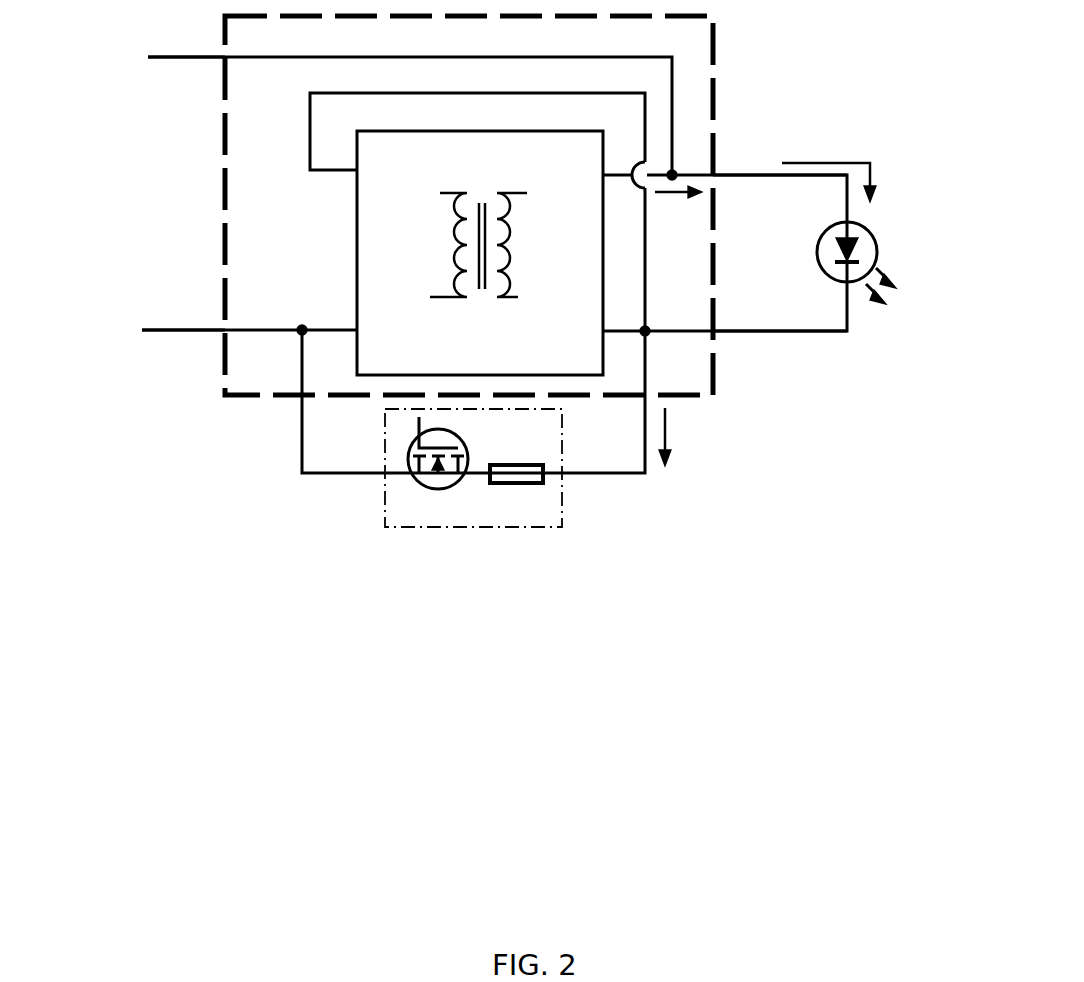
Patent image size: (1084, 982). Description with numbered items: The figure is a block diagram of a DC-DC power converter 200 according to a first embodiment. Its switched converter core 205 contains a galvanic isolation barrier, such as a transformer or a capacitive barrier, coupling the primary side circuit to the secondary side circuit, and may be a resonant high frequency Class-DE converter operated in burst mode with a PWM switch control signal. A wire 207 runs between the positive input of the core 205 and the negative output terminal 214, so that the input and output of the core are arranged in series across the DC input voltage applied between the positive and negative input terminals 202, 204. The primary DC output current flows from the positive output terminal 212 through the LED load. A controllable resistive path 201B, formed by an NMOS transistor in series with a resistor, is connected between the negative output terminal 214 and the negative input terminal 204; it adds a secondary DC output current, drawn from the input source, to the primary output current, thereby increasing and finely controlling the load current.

The DC-DC power converter 200 is at (205, 512).
The controllable resistive path 201B is at (415, 530).
The positive input terminal 202 is at (148, 53).
The negative input terminal 204 is at (143, 337).
The switched converter core 205 is at (250, 400).
The wire 207 is at (308, 128).
The positive output terminal 212 is at (740, 173).
The negative output terminal 214 is at (770, 333).